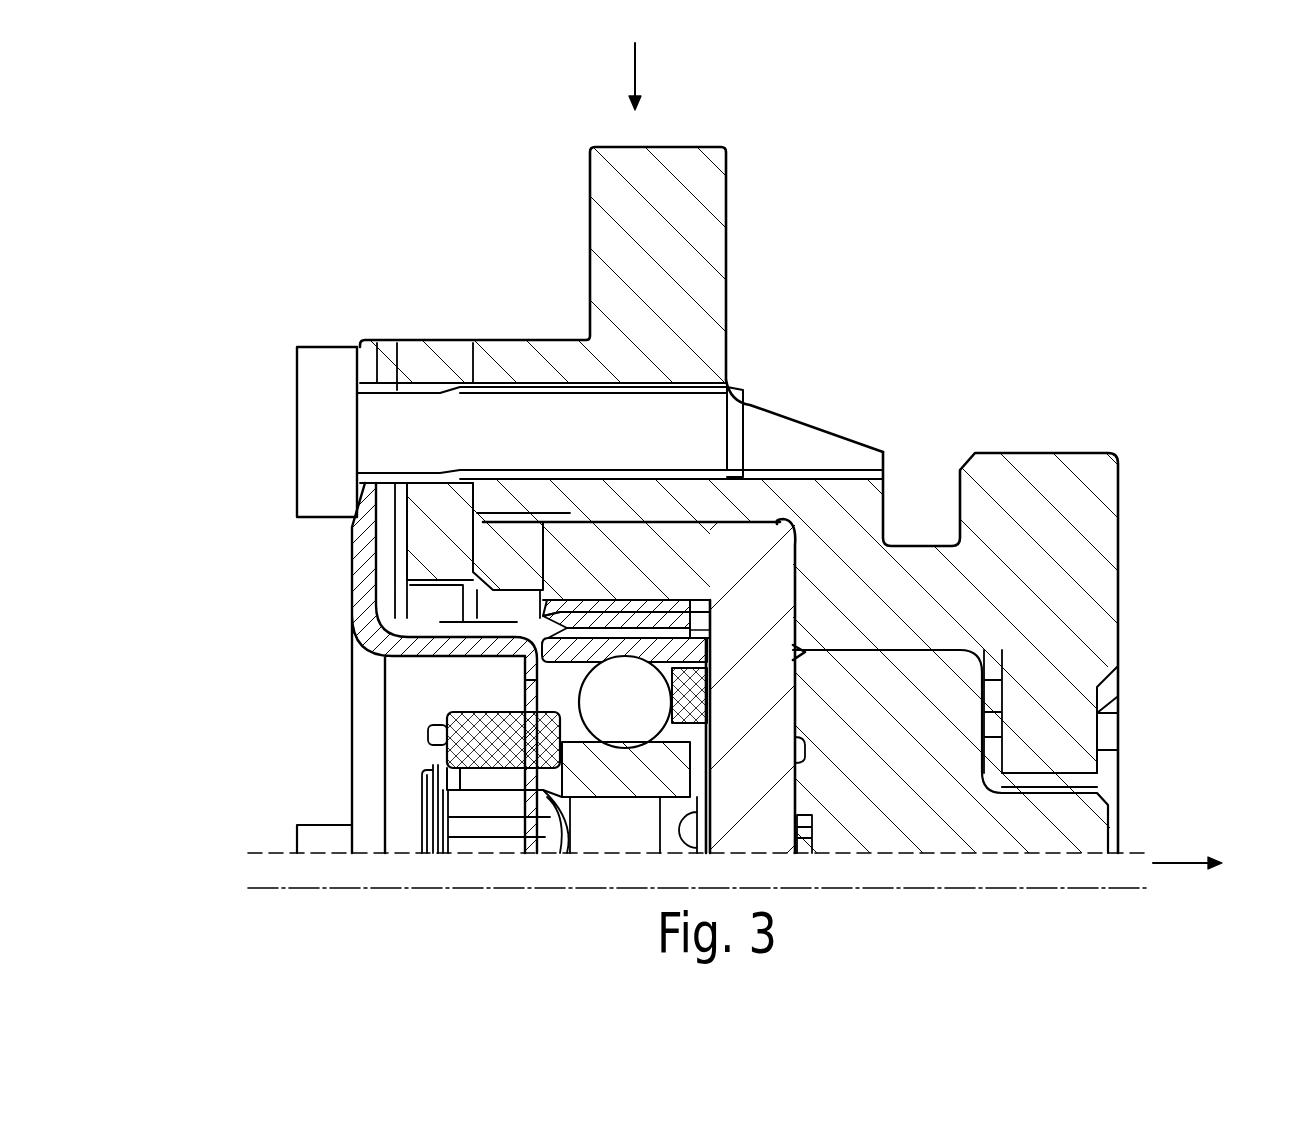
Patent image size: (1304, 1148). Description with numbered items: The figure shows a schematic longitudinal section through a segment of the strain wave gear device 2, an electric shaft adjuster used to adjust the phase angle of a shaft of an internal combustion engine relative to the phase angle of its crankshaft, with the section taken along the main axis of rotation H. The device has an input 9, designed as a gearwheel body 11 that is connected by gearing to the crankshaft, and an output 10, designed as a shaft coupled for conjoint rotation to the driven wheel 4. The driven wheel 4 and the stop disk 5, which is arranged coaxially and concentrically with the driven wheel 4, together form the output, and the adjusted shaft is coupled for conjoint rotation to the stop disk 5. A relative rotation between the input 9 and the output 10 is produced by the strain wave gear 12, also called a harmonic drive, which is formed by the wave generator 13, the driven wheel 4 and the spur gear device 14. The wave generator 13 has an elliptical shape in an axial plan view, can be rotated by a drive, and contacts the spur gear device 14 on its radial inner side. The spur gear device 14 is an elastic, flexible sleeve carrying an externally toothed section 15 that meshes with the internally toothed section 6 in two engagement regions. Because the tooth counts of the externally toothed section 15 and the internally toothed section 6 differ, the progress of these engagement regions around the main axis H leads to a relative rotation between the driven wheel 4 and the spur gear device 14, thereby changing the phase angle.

The strain wave gear device 2 is at (1086, 272).
The driven wheel 4 is at (767, 573).
The stop disk 5 is at (1097, 827).
The internally toothed section 6 is at (612, 607).
The input 9 is at (645, 76).
The output 10 is at (1187, 849).
The gearwheel body 11 is at (1083, 503).
The strain wave gear 12 is at (228, 513).
The wave generator 13 is at (293, 653).
The spur gear device 14 is at (655, 623).
The externally toothed section 15 is at (638, 623).
The main axis of rotation H is at (1140, 887).